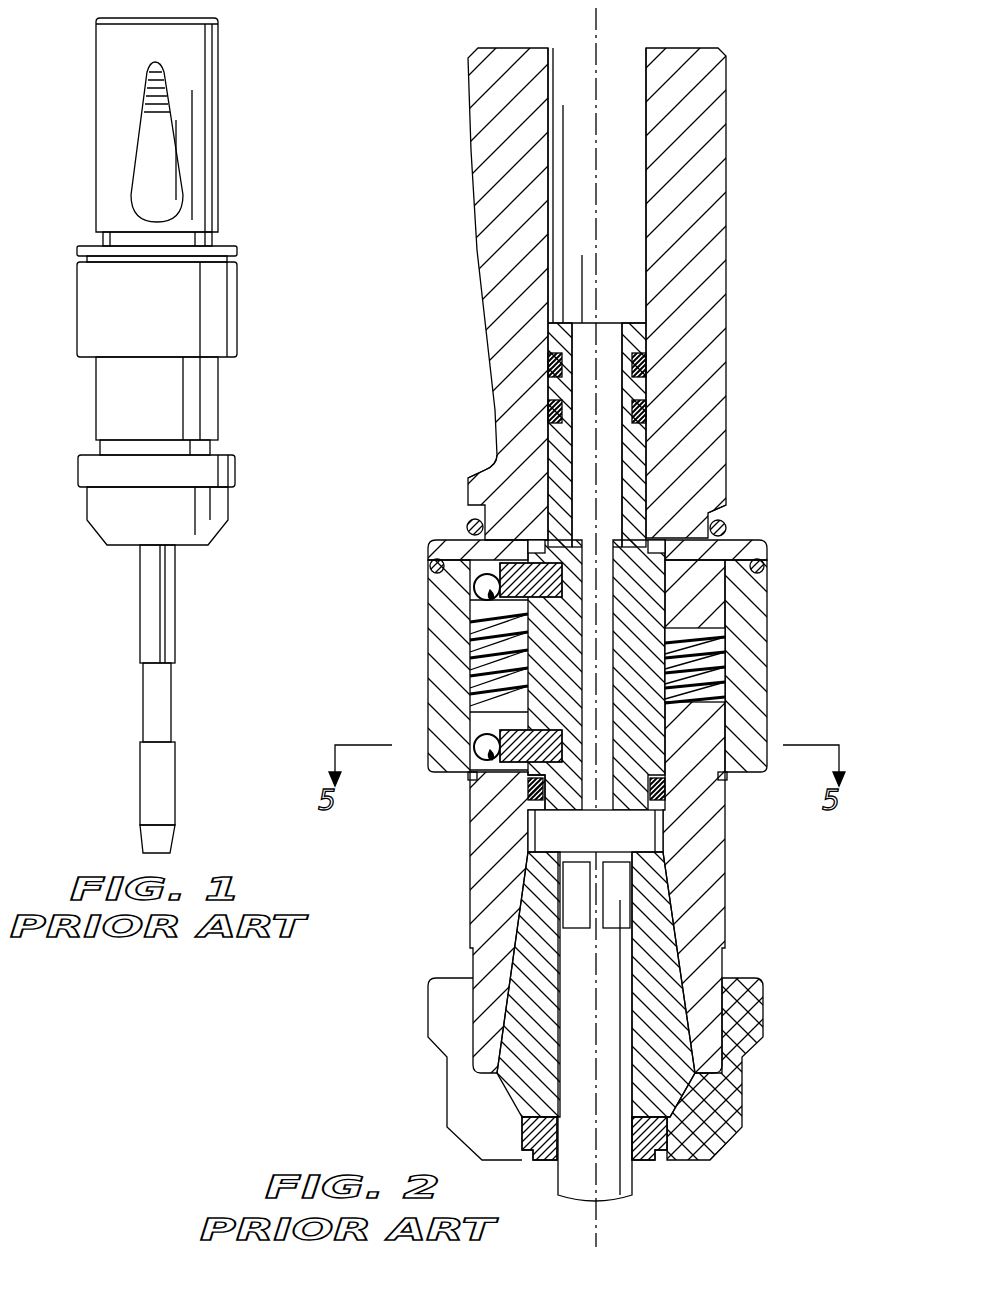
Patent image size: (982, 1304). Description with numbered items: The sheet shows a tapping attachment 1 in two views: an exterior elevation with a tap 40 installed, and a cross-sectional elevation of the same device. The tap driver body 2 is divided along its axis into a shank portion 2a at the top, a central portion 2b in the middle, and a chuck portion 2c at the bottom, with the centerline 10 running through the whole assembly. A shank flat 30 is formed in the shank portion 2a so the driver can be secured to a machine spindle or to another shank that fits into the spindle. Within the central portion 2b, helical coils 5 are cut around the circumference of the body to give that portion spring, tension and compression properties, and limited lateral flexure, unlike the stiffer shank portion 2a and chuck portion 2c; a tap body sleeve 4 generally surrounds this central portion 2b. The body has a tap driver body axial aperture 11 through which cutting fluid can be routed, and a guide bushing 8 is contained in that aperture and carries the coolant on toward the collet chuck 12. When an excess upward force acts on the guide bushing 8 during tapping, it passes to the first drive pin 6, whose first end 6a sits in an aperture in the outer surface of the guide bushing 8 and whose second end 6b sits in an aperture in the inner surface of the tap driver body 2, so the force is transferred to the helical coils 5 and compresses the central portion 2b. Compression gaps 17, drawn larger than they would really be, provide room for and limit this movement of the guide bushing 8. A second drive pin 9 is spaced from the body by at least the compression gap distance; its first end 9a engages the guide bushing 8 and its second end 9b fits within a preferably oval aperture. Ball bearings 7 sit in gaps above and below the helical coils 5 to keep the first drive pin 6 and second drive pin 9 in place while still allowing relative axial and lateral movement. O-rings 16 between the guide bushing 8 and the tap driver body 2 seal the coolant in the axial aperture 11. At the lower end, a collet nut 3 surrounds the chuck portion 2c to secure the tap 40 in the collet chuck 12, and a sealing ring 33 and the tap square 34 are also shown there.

In FIG. 1, the tapping attachment 1 is at (62, 166).
In FIG. 2, the tapping attachment 1 is at (368, 172).
In FIG. 1, the tap driver body 2 is at (207, 200).
In FIG. 2, the tap driver body 2 is at (680, 276).
In FIG. 1, the shank portion 2a is at (196, 126).
In FIG. 2, the shank portion 2a is at (496, 158).
In FIG. 2, the central portion 2b is at (705, 600).
In FIG. 1, the chuck portion 2c is at (240, 510).
In FIG. 2, the chuck portion 2c is at (492, 878).
In FIG. 1, the collet nut 3 is at (125, 512).
In FIG. 2, the collet nut 3 is at (745, 1010).
In FIG. 1, the tap body sleeve 4 is at (132, 322).
In FIG. 2, the tap body sleeve 4 is at (445, 648).
In FIG. 2, the helical coils 5 is at (470, 684).
In FIG. 2, the first drive pin 6 is at (505, 775).
In FIG. 2, the first end of first drive pin 6a is at (562, 750).
In FIG. 2, the second end of first drive pin 6b is at (505, 724).
In FIG. 2, the ball bearings 7 is at (474, 587).
In FIG. 2, the guide bushing 8 is at (562, 445).
In FIG. 2, the second drive pin 9 is at (467, 533).
In FIG. 2, the first end of second drive pin 9a is at (560, 583).
In FIG. 2, the second end of second drive pin 9b is at (468, 628).
In FIG. 2, the axis 10 is at (598, 30).
In FIG. 2, the tap driver body axial aperture 11 is at (634, 164).
In FIG. 2, the collet chuck 12 is at (665, 972).
In FIG. 2, the O-rings 16 is at (548, 366).
In FIG. 2, the compression gaps 17 is at (498, 480).
In FIG. 1, the shank flat 30 is at (150, 170).
In FIG. 2, the sealing ring 33 is at (545, 1140).
In FIG. 2, the tap square 34 is at (615, 912).
In FIG. 1, the tap 40 is at (150, 648).
In FIG. 2, the tap 40 is at (612, 1186).